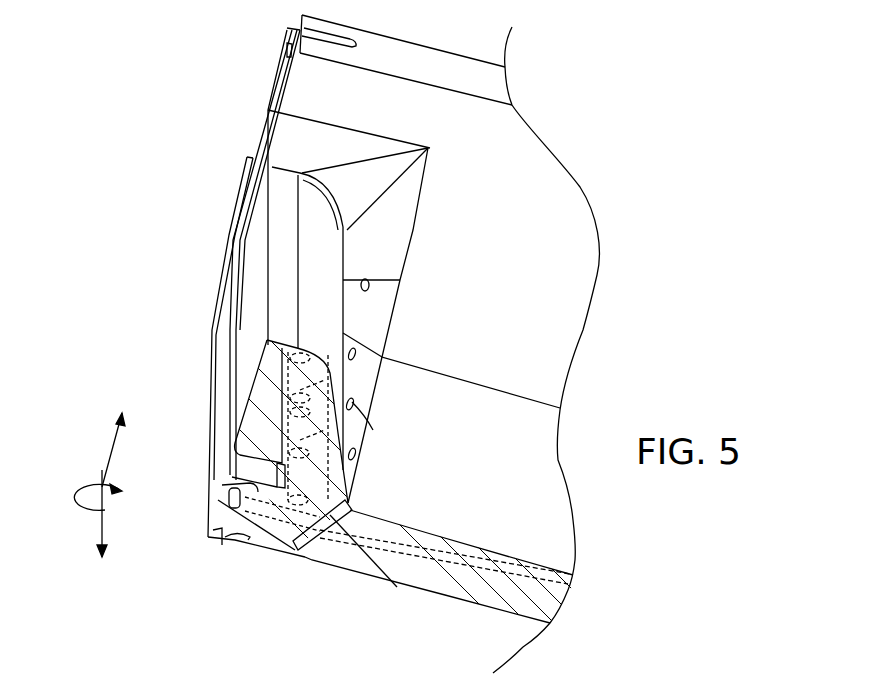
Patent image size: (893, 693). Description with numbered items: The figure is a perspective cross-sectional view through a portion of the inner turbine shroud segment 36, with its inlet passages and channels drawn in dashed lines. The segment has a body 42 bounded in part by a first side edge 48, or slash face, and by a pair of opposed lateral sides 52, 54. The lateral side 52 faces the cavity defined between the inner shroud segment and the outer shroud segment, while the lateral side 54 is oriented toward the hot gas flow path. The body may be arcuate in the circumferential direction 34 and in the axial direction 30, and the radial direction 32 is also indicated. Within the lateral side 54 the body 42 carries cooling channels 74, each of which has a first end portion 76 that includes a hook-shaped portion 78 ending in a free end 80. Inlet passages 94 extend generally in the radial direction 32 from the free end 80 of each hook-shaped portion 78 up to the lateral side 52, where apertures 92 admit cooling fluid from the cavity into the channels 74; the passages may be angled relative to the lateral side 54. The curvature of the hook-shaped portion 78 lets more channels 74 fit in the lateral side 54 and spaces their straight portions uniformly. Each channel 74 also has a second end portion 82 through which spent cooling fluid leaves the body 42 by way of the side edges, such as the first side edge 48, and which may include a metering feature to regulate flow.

The axial direction 30 is at (102, 527).
The radial direction 32 is at (110, 452).
The circumferential direction 34 is at (83, 510).
The inner turbine shroud segment 36 is at (252, 337).
The body 42 is at (253, 343).
The first side edge 48 is at (215, 440).
The lateral side 52 is at (522, 533).
The lateral side 54 is at (423, 590).
The channel 74 is at (357, 547).
The first end portion 76 is at (245, 540).
The hook-shaped portion 78 is at (207, 487).
The free end 80 is at (275, 547).
The second end portion 82 is at (213, 547).
The apertures 92 is at (354, 452).
The inlet passages 94 is at (322, 560).